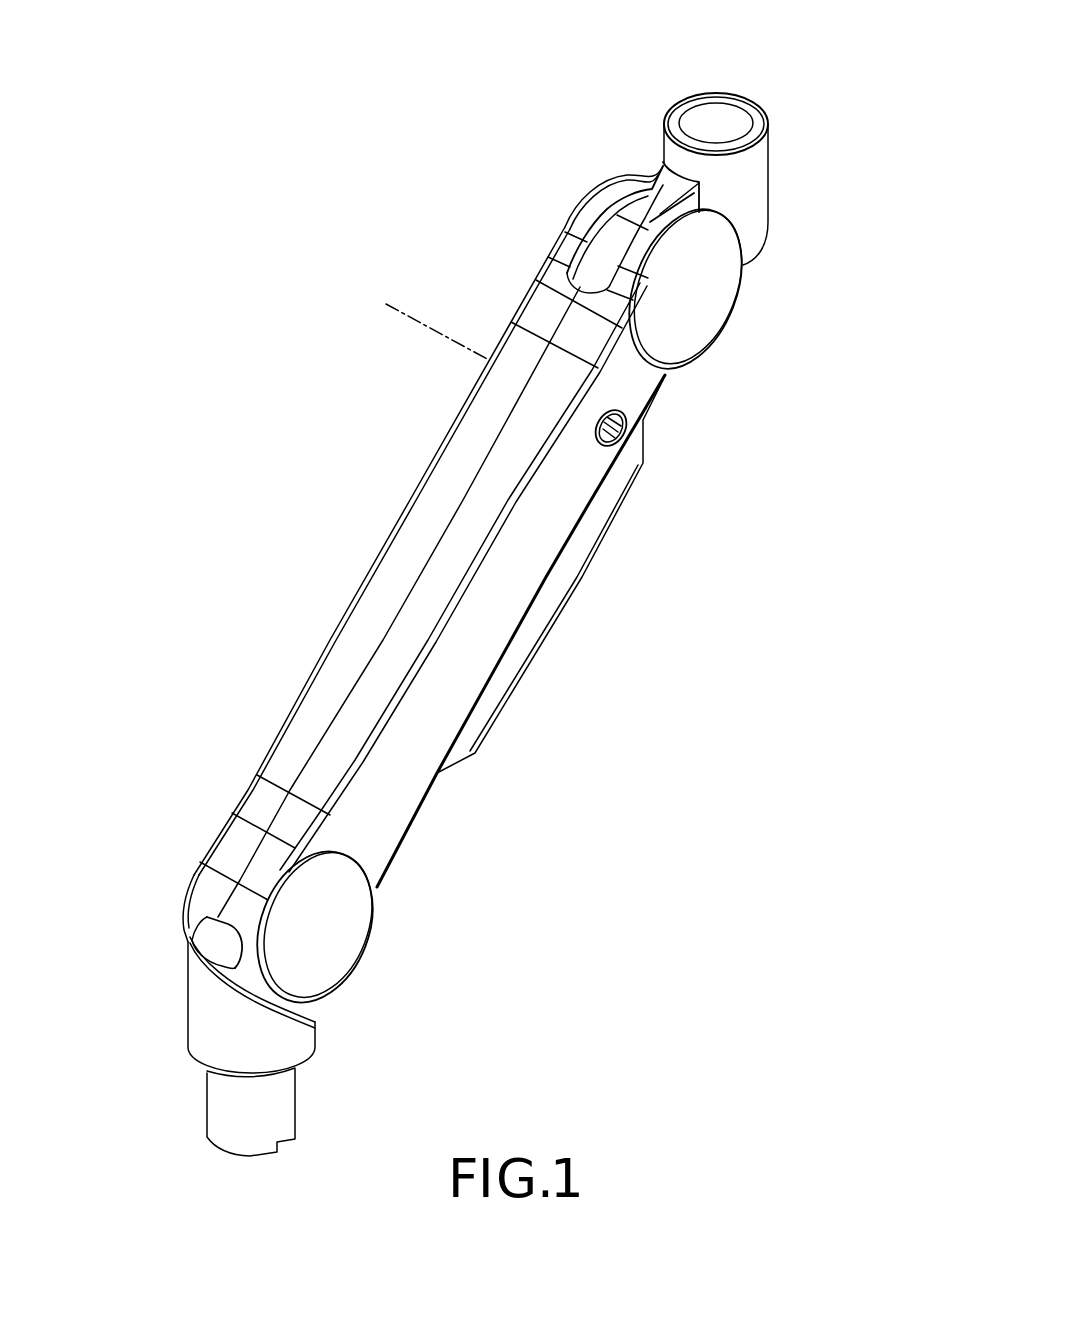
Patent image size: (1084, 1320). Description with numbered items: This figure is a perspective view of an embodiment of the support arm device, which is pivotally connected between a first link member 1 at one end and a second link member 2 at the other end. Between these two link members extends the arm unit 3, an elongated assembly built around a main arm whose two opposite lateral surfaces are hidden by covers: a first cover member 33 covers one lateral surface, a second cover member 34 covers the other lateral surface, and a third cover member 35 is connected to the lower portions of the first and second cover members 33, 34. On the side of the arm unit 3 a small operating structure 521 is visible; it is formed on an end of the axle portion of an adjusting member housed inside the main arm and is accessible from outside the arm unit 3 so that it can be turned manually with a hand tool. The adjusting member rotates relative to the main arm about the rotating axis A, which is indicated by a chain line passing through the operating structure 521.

The first link member 1 is at (181, 1007).
The second link member 2 is at (783, 134).
The arm unit 3 is at (433, 430).
The first cover member 33 is at (399, 788).
The second cover member 34 is at (360, 640).
The third cover member 35 is at (604, 516).
The operating structure 521 is at (624, 430).
The rotating axis A is at (630, 443).